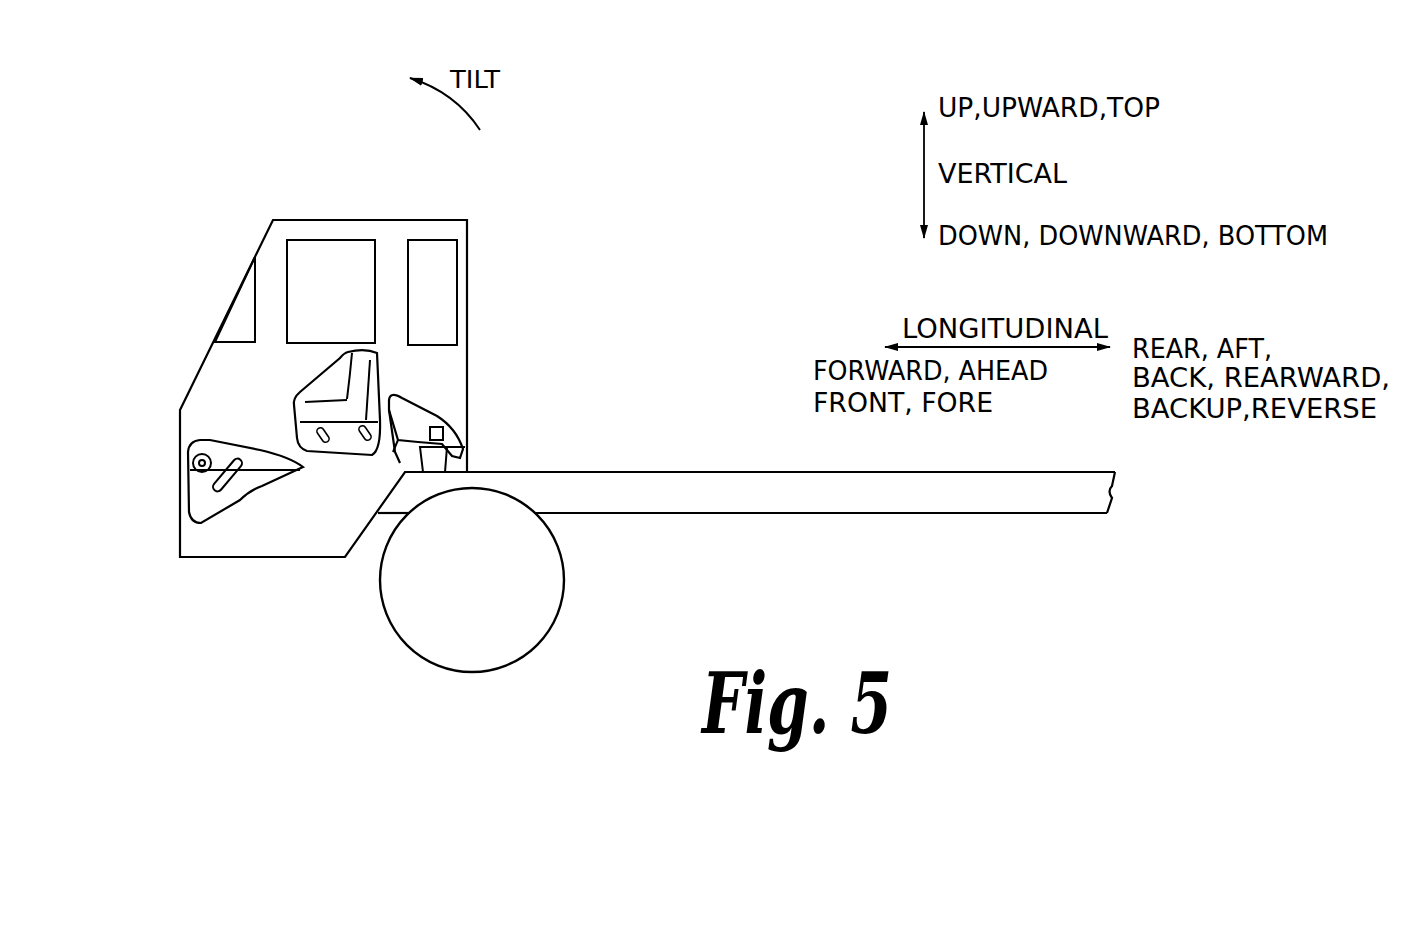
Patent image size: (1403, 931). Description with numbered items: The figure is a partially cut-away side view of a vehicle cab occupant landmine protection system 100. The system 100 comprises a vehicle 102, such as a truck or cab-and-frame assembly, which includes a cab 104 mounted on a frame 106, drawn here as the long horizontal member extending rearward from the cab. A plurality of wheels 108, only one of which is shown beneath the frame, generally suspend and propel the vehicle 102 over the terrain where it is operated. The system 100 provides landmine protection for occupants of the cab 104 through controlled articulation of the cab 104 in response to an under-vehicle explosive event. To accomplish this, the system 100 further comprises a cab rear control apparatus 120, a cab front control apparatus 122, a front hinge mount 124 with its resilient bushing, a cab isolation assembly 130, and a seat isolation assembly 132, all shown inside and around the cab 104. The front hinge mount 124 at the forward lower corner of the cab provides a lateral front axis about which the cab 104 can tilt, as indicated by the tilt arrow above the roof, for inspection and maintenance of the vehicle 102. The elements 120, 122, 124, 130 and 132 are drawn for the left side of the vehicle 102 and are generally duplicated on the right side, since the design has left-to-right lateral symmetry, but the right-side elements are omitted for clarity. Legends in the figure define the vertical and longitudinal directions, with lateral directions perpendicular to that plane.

The vehicle cab occupant landmine protection system 100 is at (510, 198).
The vehicle 102 is at (483, 287).
The cab 104 is at (342, 218).
The frame 106 is at (885, 497).
The wheels 108 is at (558, 580).
The cab rear control apparatus 120 is at (413, 418).
The cab front control apparatus 122 is at (240, 503).
The front hinge mount 124 is at (183, 458).
The cab isolation assembly 130 is at (472, 445).
The seat isolation assembly 132 is at (292, 408).